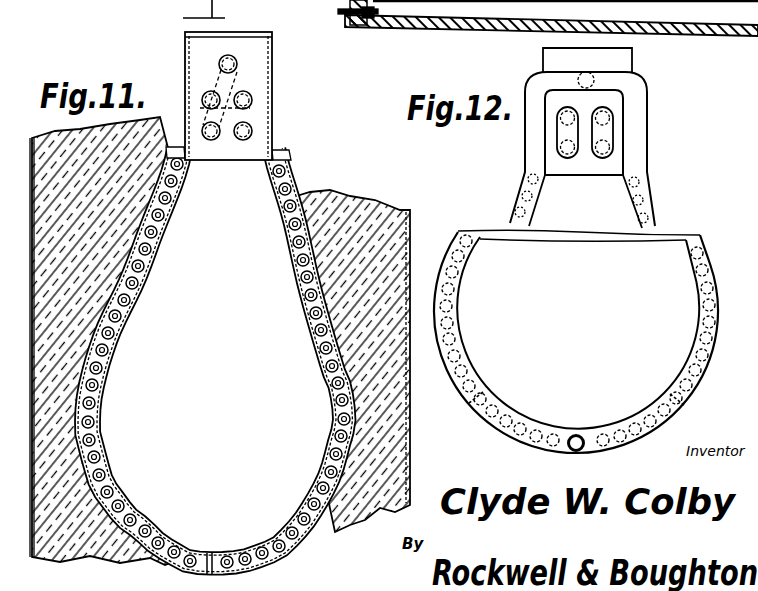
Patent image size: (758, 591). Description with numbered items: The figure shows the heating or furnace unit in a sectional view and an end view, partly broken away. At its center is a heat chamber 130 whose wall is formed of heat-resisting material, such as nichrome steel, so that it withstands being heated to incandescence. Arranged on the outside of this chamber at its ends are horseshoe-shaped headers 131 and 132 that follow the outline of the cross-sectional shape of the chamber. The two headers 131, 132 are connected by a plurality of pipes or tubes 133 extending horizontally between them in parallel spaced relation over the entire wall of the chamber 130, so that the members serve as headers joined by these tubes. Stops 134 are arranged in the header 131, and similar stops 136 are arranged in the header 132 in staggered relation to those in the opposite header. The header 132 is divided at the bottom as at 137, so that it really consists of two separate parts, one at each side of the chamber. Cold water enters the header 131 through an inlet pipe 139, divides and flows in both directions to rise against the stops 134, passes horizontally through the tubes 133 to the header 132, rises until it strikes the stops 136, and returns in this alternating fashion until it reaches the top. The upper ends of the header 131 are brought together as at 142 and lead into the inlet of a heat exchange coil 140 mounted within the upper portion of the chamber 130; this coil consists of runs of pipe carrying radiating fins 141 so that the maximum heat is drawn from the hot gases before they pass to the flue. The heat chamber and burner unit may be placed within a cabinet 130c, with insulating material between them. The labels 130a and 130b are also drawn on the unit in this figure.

In FIG. 11, the heat chamber 130 is at (328, 350).
In FIG. 11, the bucket side wall flange 130a is at (288, 187).
In FIG. 11, the packing material 130b is at (382, 212).
In FIG. 11, the cabinet 130c is at (411, 226).
In FIG. 12, the header 131 is at (457, 323).
In FIG. 11, the header 132 is at (88, 456).
In FIG. 11, the pipes or tubes 133 is at (100, 482).
In FIG. 12, the stops 134 is at (489, 382).
In FIG. 11, the stops 136 is at (100, 400).
In FIG. 11, the division of header 137 is at (210, 553).
In FIG. 12, the inlet pipe 139 is at (579, 436).
In FIG. 11, the heat exchange coil 140 is at (257, 100).
In FIG. 12, the heat exchange coil 140 is at (627, 133).
In FIG. 11, the radiating fins 141 is at (256, 74).
In FIG. 12, the junction of header upper ends 142 is at (612, 83).